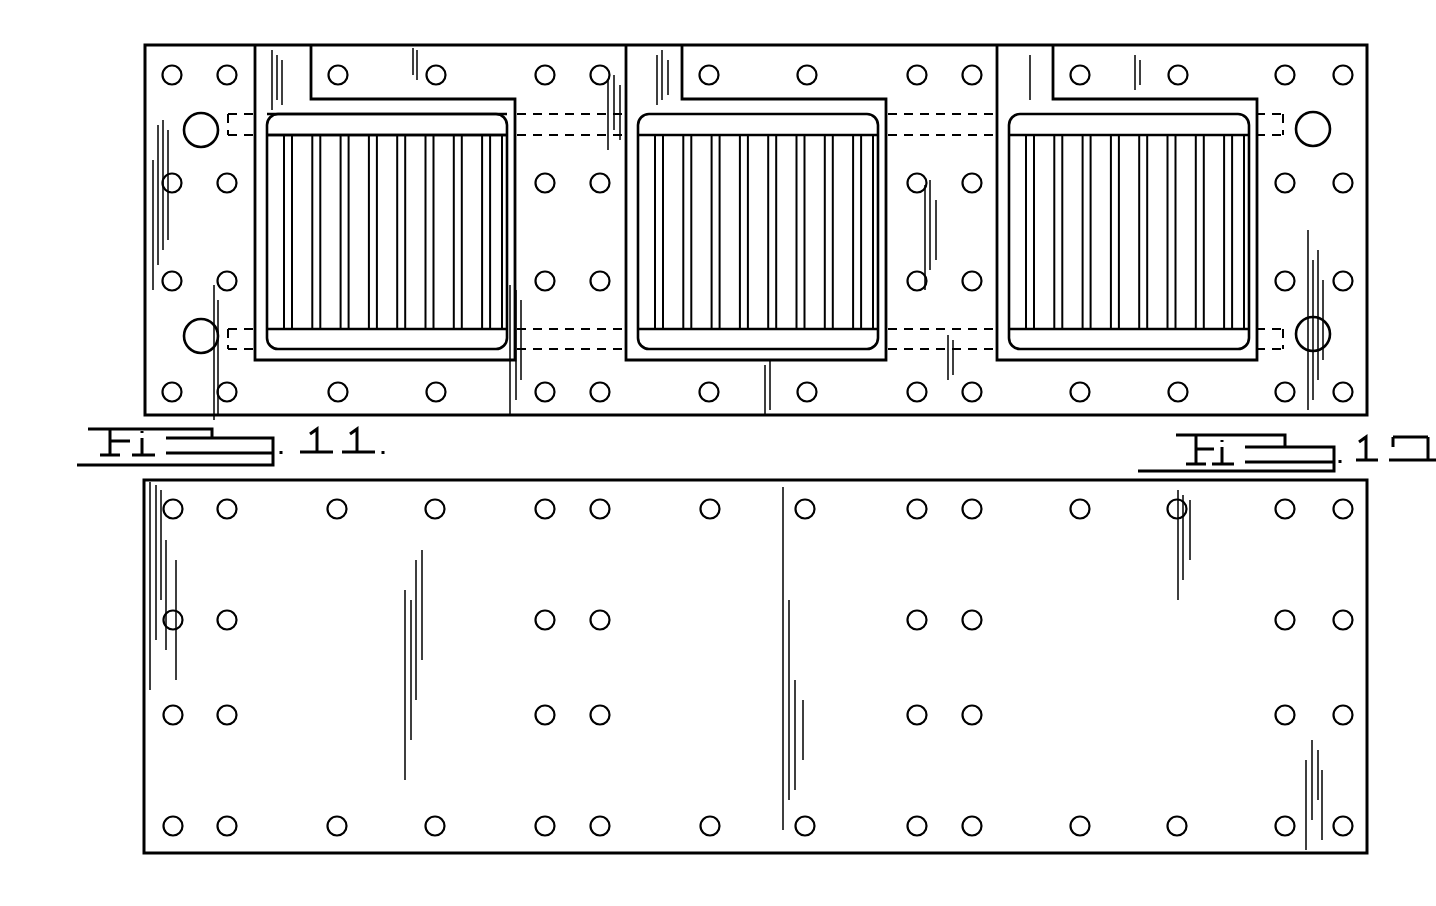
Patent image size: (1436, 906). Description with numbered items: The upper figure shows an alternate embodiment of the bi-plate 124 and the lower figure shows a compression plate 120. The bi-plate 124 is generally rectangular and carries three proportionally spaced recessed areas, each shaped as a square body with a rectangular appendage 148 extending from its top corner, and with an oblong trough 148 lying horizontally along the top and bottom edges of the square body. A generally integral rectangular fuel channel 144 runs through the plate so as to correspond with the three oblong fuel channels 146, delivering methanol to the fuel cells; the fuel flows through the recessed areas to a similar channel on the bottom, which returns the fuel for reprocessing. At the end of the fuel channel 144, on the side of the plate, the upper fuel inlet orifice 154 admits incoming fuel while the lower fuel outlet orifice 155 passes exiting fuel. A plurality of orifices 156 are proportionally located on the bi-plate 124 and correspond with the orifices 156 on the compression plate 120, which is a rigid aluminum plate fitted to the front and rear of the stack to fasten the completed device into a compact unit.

In FIG. 12, the compression plate 120 is at (1369, 716).
In FIG. 11, the bi-plate 124 is at (1368, 97).
In FIG. 11, the fuel channel 144 is at (937, 115).
In FIG. 11, the oblong fuel channel 146 is at (833, 118).
In FIG. 11, the rectangular appendage 148 is at (660, 57).
In FIG. 11, the fuel inlet orifice 154 is at (198, 118).
In FIG. 11, the fuel outlet orifice 155 is at (1328, 337).
In FIG. 11, the orifices 156 is at (545, 66).
In FIG. 12, the orifices 156 is at (336, 816).